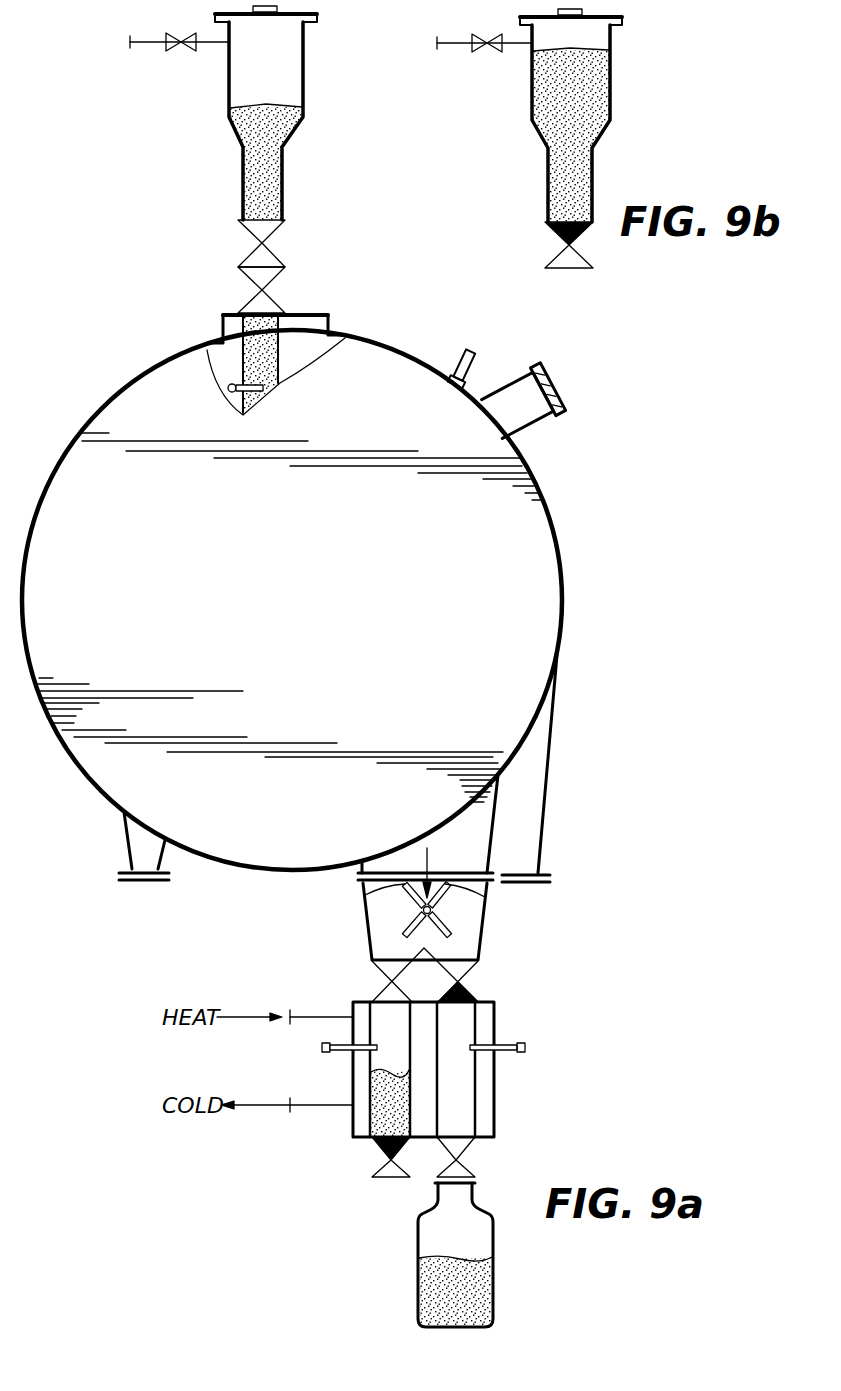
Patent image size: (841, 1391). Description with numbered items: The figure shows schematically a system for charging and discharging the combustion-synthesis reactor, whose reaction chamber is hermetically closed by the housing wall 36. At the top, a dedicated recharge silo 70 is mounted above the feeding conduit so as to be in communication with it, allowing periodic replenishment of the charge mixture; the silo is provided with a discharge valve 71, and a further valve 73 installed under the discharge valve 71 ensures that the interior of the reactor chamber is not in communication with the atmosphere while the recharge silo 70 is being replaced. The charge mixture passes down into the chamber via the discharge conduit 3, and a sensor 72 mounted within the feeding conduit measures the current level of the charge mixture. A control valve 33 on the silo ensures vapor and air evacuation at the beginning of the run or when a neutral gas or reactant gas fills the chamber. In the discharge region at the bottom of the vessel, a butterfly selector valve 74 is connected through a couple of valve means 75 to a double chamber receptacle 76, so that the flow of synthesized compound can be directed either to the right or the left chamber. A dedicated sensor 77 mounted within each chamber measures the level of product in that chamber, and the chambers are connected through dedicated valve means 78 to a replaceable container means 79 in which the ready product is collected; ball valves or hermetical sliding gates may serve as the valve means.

In FIG. 9A, the discharge conduit 3 is at (297, 352).
In FIG. 9A, the control valve 33 is at (181, 32).
In FIG. 9A, the housing wall 36 is at (84, 764).
In FIG. 9A, the recharge silo 70 is at (306, 66).
In FIG. 9B, the recharge silo 70 is at (610, 66).
In FIG. 9A, the discharge valve 71 is at (246, 262).
In FIG. 9B, the discharge valve 71 is at (552, 262).
In FIG. 9A, the sensor 72 is at (222, 388).
In FIG. 9A, the valve 73 is at (250, 304).
In FIG. 9A, the butterfly selector valve 74 is at (443, 898).
In FIG. 9A, the valve means 75 is at (378, 980).
In FIG. 9A, the double chamber receptacle 76 is at (385, 1013).
In FIG. 9A, the sensor 77 is at (343, 1055).
In FIG. 9A, the valve means 78 is at (381, 1158).
In FIG. 9A, the replaceable container means 79 is at (418, 1238).